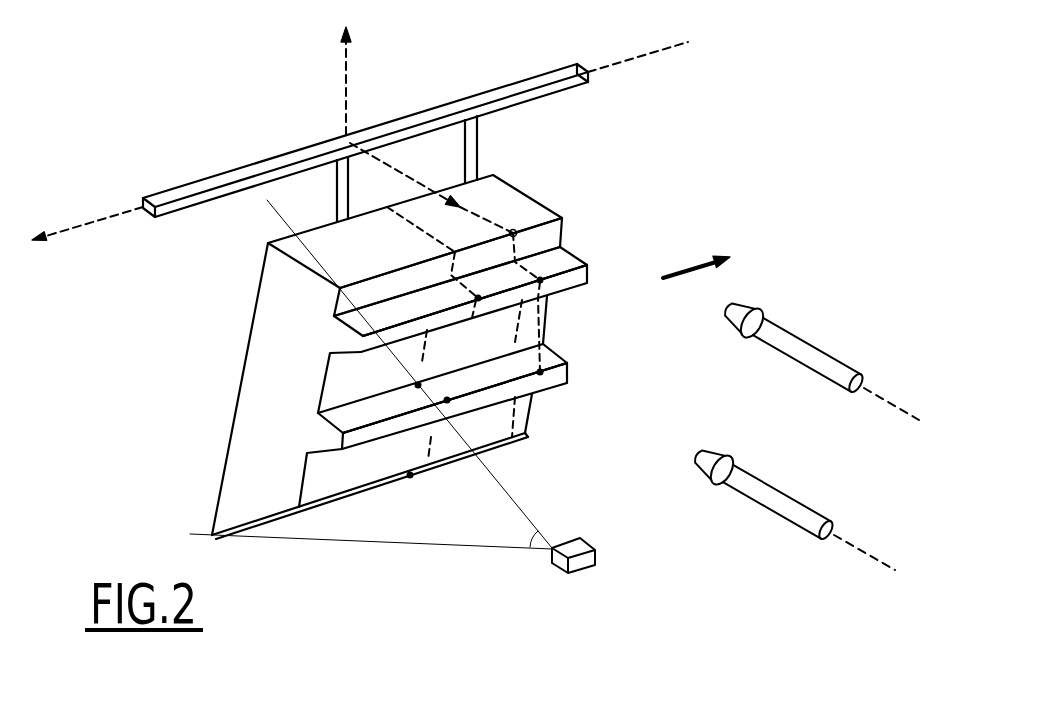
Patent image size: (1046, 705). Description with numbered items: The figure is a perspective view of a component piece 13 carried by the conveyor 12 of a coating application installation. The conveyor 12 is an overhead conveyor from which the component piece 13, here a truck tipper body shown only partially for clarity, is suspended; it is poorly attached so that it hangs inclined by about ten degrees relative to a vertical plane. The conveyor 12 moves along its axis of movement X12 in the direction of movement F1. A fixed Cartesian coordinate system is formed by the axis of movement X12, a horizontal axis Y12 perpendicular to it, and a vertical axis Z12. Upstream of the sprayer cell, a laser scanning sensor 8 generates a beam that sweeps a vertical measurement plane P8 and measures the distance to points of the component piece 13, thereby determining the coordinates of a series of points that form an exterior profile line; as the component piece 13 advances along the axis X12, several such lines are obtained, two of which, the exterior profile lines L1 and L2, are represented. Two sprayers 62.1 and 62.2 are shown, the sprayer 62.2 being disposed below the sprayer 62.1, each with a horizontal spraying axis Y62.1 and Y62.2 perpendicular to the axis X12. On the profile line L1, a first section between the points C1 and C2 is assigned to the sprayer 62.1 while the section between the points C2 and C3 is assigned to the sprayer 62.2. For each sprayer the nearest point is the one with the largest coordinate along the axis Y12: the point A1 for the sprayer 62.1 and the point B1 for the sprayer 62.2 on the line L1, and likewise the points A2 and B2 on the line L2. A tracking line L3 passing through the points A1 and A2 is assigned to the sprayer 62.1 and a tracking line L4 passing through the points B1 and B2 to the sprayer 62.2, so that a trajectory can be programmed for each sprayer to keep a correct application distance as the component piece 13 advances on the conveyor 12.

The conveyor 12 is at (192, 187).
The component piece 13 is at (293, 390).
The sensor 8 is at (580, 540).
The sprayer 62.1 is at (807, 350).
The sprayer 62.2 is at (775, 502).
The vertical axis Z12 is at (324, 71).
The axis of movement of the conveyor X12 is at (354, 163).
The horizontal axis Y12 is at (431, 188).
The spraying axis Y62.1 is at (885, 416).
The spraying axis Y62.2 is at (857, 567).
The exterior profile line L1 is at (453, 263).
The exterior profile line L2 is at (505, 330).
The tracking line L3 is at (587, 266).
The tracking line L4 is at (567, 373).
The point A1 is at (478, 296).
The point A2 is at (540, 280).
The point B1 is at (527, 395).
The point B2 is at (545, 350).
The point C1 is at (453, 277).
The point C2 is at (404, 376).
The point C3 is at (422, 493).
The measurement plane P8 is at (371, 374).
The direction of movement F1 is at (696, 255).